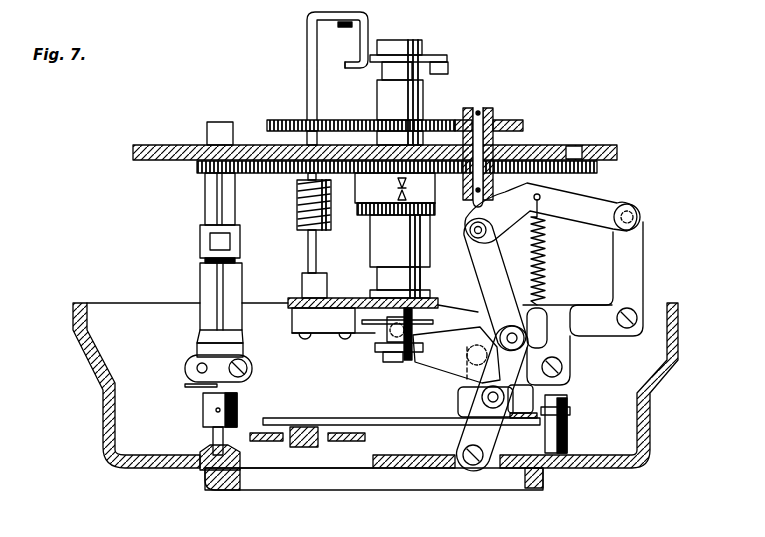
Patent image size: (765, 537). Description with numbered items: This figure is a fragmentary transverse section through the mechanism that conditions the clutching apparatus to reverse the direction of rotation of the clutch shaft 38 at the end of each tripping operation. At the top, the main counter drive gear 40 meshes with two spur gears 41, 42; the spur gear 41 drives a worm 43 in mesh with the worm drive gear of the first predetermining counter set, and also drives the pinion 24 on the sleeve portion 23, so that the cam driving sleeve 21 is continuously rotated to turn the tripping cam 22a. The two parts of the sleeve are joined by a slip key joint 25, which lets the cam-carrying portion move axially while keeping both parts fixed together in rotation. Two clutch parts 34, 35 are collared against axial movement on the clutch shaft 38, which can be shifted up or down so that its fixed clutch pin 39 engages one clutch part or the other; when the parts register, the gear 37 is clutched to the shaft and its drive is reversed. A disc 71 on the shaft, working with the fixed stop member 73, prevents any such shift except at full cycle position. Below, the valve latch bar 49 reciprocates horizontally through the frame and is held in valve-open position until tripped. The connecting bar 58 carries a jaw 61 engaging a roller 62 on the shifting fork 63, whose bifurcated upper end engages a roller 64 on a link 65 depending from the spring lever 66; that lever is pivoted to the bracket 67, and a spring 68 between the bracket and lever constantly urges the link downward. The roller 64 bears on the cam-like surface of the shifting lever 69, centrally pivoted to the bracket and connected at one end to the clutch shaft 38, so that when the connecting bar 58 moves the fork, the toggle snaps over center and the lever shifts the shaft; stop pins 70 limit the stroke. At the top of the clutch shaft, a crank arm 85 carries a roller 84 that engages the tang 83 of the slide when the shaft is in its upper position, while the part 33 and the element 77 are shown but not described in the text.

The cam driving sleeve 21 is at (208, 275).
The tripping cam 22a is at (187, 386).
The sleeve portion 23 is at (212, 202).
The pinion 24 is at (200, 172).
The slip key joint 25 is at (210, 242).
The gear 33 is at (365, 157).
The clutch part 34 is at (375, 180).
The clutch part 35 is at (375, 197).
The gear 37 is at (358, 215).
The clutch shaft 38 is at (393, 357).
The clutch pin 39 is at (420, 156).
The main counter drive gear 40 is at (422, 113).
The spur gear 41 is at (278, 118).
The spur gear 42 is at (493, 117).
The worm 43 is at (295, 190).
The valve latch bar 49 is at (305, 446).
The connecting bar 58 is at (416, 425).
The jaw 61 is at (457, 402).
The roller 62 is at (466, 447).
The shifting fork 63 is at (530, 337).
The roller 64 is at (496, 332).
The link 65 is at (490, 270).
The spring lever 66 is at (590, 200).
The bracket 67 is at (637, 252).
The spring 68 is at (547, 268).
The shifting lever 69 is at (443, 350).
The stop pin 70 is at (567, 425).
The disc 71 is at (443, 310).
The fixed stop member 73 is at (360, 345).
The rod 77 is at (323, 20).
The tang 83 is at (363, 67).
The roller 84 is at (450, 66).
The crank arm 85 is at (430, 53).